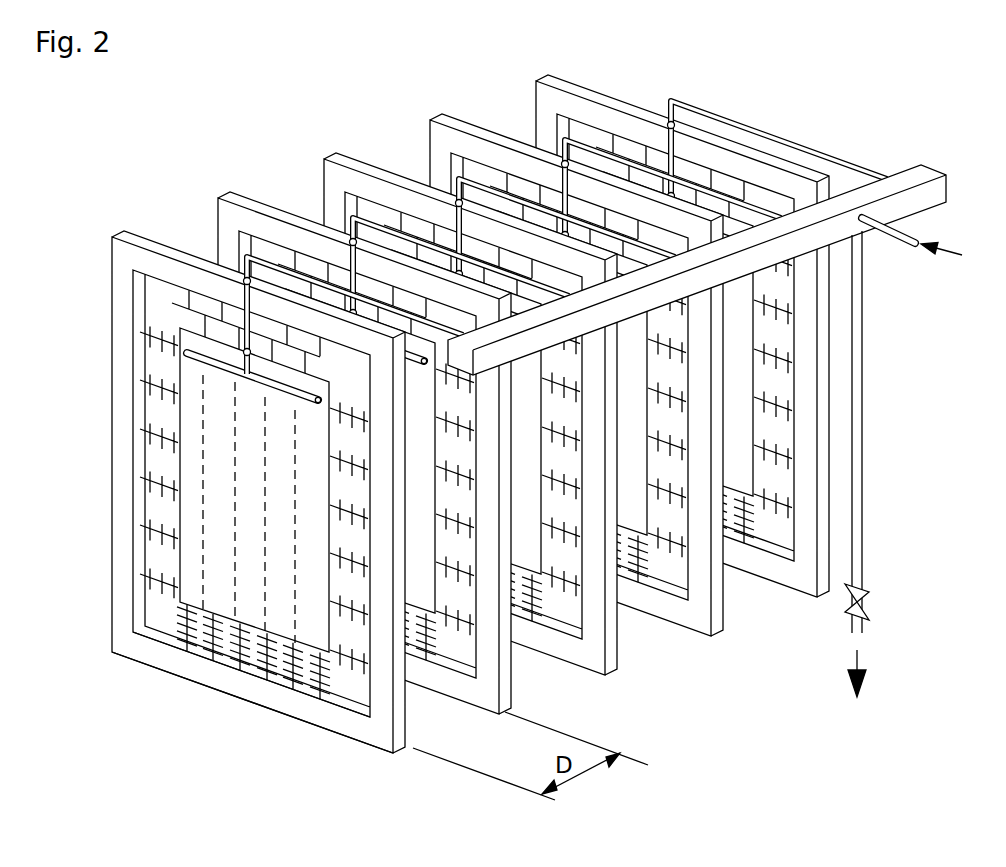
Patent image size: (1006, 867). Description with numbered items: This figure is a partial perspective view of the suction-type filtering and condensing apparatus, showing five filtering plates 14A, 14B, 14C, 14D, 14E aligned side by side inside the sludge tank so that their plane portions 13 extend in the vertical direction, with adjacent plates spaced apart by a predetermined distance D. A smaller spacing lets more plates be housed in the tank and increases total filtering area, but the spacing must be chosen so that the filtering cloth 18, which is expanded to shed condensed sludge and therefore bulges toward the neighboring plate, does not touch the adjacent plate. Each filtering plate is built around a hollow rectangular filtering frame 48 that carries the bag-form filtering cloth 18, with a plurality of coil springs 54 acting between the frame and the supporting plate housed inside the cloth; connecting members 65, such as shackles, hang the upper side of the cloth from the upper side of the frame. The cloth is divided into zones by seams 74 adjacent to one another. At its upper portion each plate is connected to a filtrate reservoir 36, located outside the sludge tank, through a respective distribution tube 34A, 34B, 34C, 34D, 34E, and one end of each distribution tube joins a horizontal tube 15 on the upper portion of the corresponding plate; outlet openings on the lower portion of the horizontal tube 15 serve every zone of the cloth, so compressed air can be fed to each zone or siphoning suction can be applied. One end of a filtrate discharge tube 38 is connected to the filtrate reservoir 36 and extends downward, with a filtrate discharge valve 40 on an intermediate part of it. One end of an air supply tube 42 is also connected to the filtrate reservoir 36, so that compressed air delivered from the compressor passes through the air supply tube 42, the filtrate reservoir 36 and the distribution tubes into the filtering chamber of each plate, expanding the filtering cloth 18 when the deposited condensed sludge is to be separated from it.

The plane portion 13 is at (118, 463).
The filtering plate 14A is at (228, 486).
The filtering plate 14B is at (246, 196).
The filtering plate 14C is at (355, 157).
The filtering plate 14D is at (460, 118).
The filtering plate 14E is at (573, 82).
The horizontal tube 15 is at (193, 466).
The filtering cloth 18 is at (253, 675).
The distribution tube 34A is at (268, 257).
The distribution tube 34B is at (378, 220).
The distribution tube 34C is at (490, 180).
The distribution tube 34D is at (625, 157).
The distribution tube 34E is at (732, 112).
The filtrate reservoir 36 is at (916, 172).
The filtrate discharge tube 38 is at (865, 508).
The filtrate discharge valve 40 is at (869, 612).
The air supply tube 42 is at (916, 244).
The filtering frame 48 is at (252, 692).
The coil spring 54 is at (222, 603).
The connecting member 65 is at (241, 301).
The seam 74 is at (176, 509).